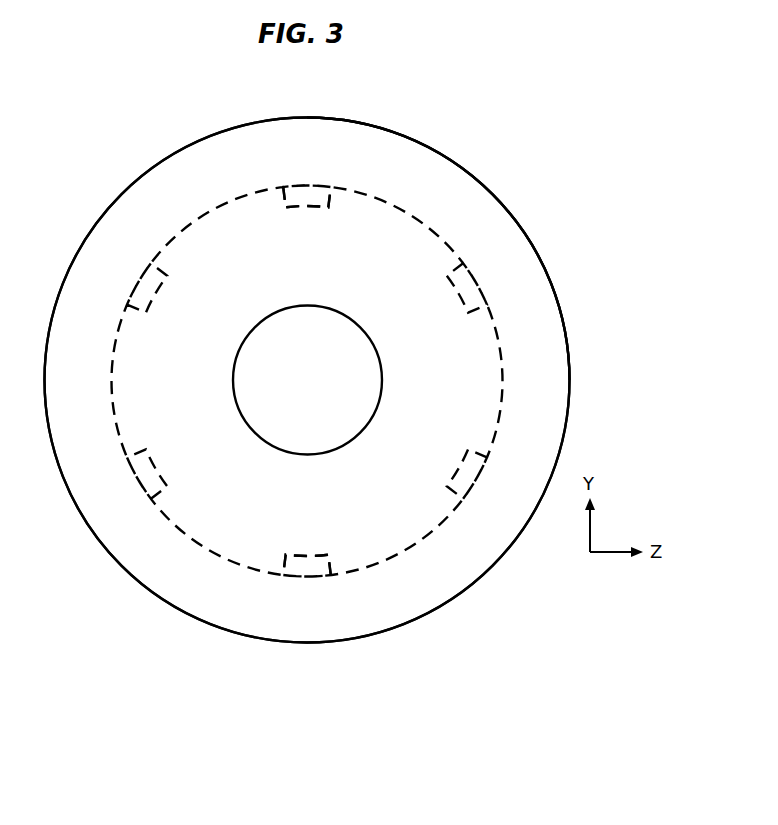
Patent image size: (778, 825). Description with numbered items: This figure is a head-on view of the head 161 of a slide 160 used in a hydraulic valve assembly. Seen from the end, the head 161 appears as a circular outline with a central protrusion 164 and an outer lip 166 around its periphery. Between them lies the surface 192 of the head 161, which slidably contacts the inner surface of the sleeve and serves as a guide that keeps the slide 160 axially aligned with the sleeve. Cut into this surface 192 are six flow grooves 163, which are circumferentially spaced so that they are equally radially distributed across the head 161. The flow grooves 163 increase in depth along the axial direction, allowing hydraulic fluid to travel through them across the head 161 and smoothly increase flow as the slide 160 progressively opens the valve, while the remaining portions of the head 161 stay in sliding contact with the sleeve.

The slide 160 is at (586, 257).
The head 161 is at (570, 643).
The flow grooves 163 is at (303, 188).
The protrusion 164 is at (347, 343).
The lip 166 is at (542, 370).
The surface 192 is at (418, 214).